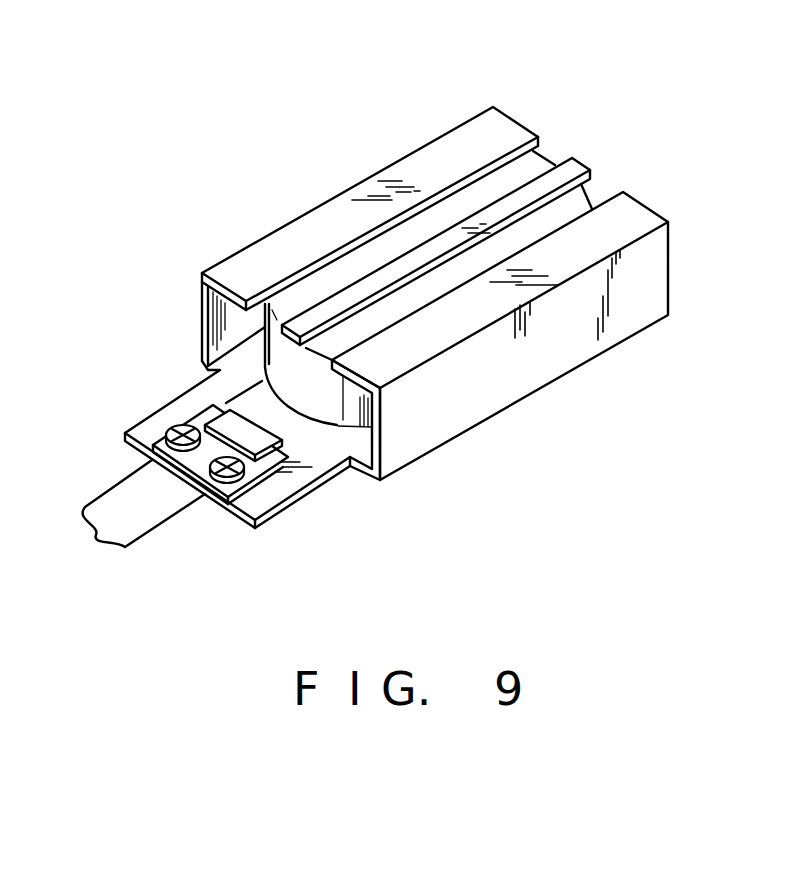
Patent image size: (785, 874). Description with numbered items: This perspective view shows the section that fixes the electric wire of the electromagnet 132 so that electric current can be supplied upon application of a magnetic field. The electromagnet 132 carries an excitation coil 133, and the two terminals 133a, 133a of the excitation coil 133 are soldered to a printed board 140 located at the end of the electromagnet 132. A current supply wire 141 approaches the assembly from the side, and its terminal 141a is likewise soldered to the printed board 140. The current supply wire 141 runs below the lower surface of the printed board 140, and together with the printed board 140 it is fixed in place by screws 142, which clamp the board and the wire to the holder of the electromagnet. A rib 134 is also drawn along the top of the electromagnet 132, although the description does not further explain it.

The housing block 132 is at (468, 112).
The rib 134 is at (573, 172).
The sheet metal bracket 133 is at (350, 463).
The bent tab of bracket 133a is at (228, 402).
The clamp plate 140 is at (198, 467).
The flat cable 141 is at (132, 488).
The cable end portion 141a is at (256, 446).
The screws 142 is at (177, 427).